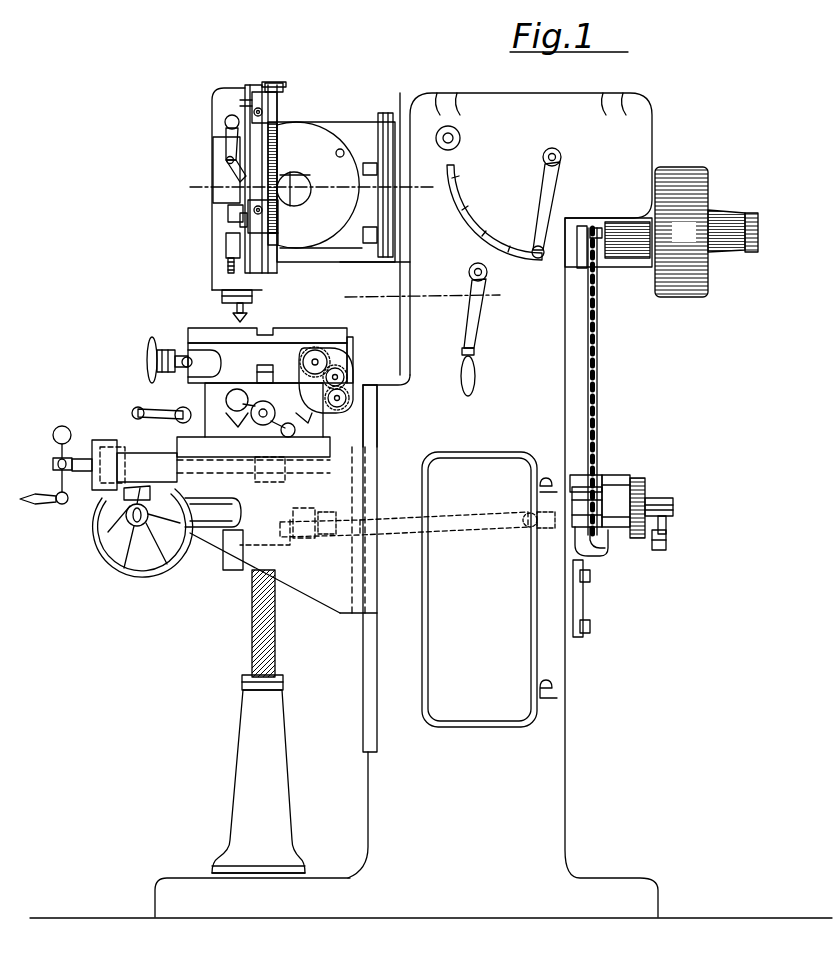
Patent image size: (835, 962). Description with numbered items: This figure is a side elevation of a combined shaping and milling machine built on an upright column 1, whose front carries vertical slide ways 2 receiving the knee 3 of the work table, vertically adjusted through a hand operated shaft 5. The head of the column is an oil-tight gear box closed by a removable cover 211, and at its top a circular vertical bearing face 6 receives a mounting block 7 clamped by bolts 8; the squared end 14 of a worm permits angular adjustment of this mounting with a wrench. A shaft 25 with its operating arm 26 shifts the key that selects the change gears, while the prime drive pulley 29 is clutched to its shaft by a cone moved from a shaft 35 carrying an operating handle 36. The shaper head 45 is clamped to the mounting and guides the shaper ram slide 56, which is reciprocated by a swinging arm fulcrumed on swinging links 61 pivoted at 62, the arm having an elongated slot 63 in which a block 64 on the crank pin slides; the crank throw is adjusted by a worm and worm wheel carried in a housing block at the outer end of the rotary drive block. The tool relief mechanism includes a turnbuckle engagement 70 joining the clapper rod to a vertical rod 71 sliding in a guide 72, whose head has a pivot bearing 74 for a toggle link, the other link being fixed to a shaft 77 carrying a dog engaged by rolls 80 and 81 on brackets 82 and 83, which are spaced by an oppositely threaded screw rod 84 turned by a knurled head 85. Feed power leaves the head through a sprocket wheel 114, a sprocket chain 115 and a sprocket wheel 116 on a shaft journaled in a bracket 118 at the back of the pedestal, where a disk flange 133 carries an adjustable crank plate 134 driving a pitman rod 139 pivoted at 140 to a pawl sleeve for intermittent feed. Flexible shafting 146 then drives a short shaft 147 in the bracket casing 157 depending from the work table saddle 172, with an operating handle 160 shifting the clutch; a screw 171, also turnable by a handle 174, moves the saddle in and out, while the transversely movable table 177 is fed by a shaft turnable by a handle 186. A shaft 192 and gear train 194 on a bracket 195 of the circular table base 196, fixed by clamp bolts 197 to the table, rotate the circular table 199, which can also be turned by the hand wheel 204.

The column 1 is at (254, 612).
The vertical slide ways 2 is at (362, 628).
The knee 3 is at (193, 588).
The hand operated shaft 5 is at (126, 512).
The circular vertical bearing face 6 is at (394, 178).
The mounting block 7 is at (362, 203).
The bolts 8 is at (368, 245).
The squared end 14 is at (453, 139).
The shaft 25 is at (560, 162).
The operating arm 26 is at (562, 194).
The prime drive pulley 29 is at (661, 232).
The shaft 35 is at (472, 280).
The operating handle 36 is at (478, 330).
The shaper head 45 is at (318, 185).
The shaper ram slide 56 is at (216, 122).
The swinging links 61 is at (342, 145).
The pivot 62 is at (340, 148).
The elongated slot 63 is at (304, 184).
The block 64 is at (285, 174).
The turnbuckle engagement 70 is at (226, 246).
The vertical rod 71 is at (230, 210).
The guide 72 is at (236, 222).
The pivot bearing 74 is at (228, 116).
The shaft 77 is at (226, 160).
The roll 80 is at (246, 100).
The roll 81 is at (244, 226).
The bracket 82 is at (278, 96).
The bracket 83 is at (278, 218).
The screw rod 84 is at (275, 130).
The knurled head 85 is at (284, 84).
The sprocket wheel 114 is at (600, 264).
The sprocket chain 115 is at (599, 410).
The sprocket wheel 116 is at (585, 485).
The bracket 118 is at (620, 480).
The disk flange 133 is at (673, 500).
The crank plate 134 is at (648, 493).
The pitman rod 139 is at (660, 548).
The pivot 140 is at (668, 533).
The flexible shafting 146 is at (450, 535).
The short shaft 147 is at (293, 548).
The bracket casing 157 is at (232, 572).
The operating handle 160 is at (175, 414).
The screw 171 is at (226, 475).
The work table saddle 172 is at (253, 420).
The handle 174 is at (56, 494).
The transversely movable table 177 is at (272, 413).
The handle 186 is at (318, 430).
The shaft 192 is at (360, 412).
The gear train 194 is at (345, 360).
The bracket 195 is at (326, 340).
The circular table base 196 is at (267, 363).
The clamp bolts 197 is at (303, 377).
The circular table 199 is at (200, 330).
The hand wheel 204 is at (152, 356).
The removable cover 211 is at (586, 98).